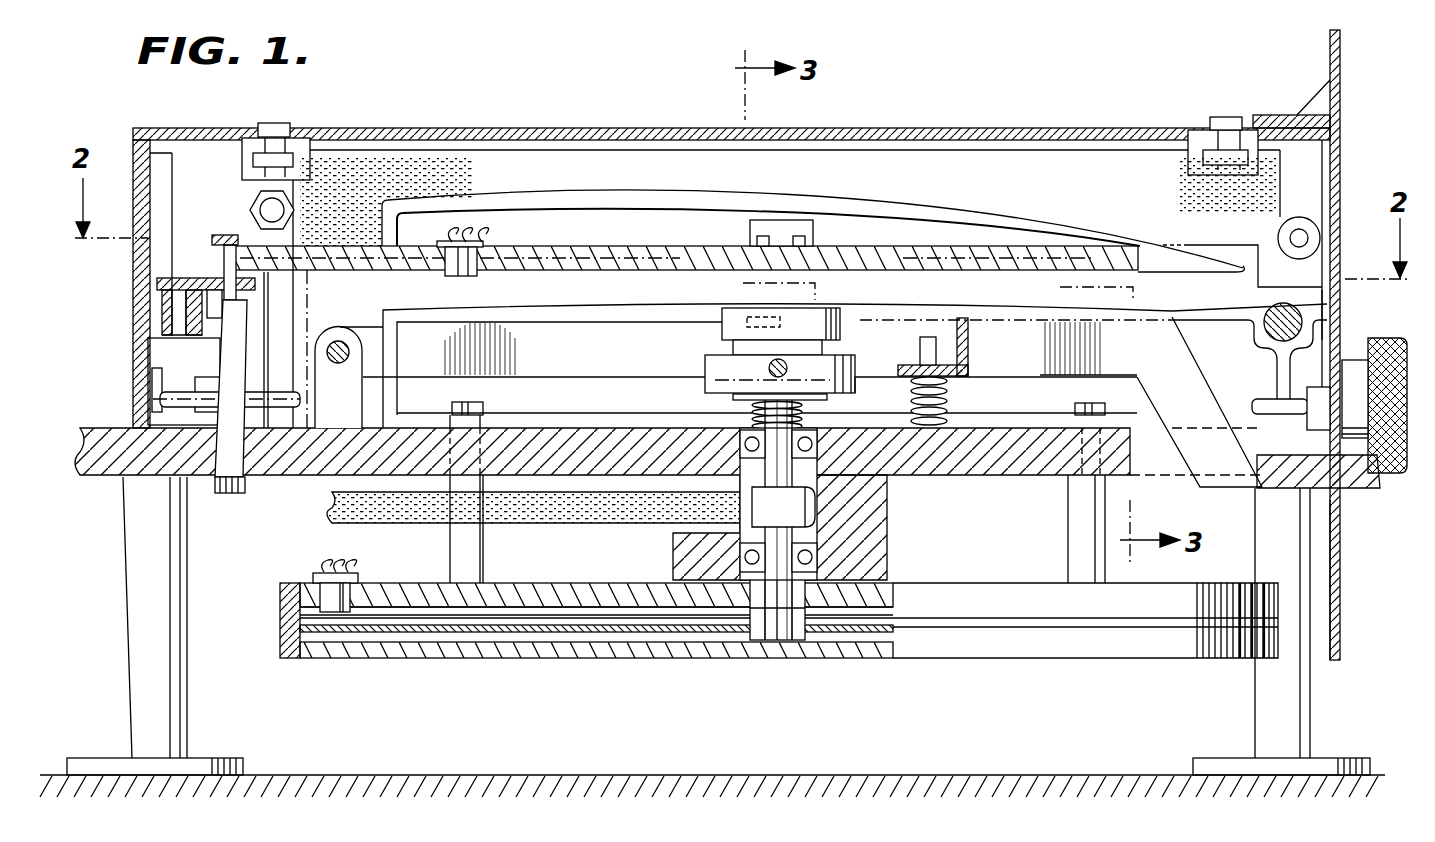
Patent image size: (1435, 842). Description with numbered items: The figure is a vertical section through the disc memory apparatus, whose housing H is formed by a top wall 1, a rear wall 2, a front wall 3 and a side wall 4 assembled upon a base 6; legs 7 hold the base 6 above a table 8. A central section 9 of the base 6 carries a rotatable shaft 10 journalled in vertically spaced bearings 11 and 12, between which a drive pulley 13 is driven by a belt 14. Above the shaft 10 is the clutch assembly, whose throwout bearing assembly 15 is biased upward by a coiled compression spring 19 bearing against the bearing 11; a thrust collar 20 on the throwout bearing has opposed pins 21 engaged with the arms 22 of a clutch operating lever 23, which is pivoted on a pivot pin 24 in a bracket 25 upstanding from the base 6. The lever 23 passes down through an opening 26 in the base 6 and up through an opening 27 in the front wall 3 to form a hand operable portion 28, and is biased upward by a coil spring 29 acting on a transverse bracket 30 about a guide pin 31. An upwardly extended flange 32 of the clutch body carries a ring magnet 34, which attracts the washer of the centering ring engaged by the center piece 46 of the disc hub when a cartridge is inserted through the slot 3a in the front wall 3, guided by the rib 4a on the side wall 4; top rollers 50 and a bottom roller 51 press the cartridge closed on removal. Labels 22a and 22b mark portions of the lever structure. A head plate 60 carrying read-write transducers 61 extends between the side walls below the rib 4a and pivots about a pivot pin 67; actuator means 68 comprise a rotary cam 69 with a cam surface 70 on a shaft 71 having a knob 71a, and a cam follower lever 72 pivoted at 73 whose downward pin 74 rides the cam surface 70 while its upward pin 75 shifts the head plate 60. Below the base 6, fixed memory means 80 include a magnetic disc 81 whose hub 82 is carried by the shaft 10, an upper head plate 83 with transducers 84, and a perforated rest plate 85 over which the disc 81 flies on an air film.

The top wall 1 is at (345, 130).
The rear wall 2 is at (140, 247).
The front wall 3 is at (1340, 158).
The transversely elongated slot 3a is at (1338, 290).
The side wall 4 is at (585, 172).
The guide rib 4a is at (915, 203).
The base 6 is at (100, 480).
The legs 7 is at (132, 684).
The table 8 is at (515, 777).
The central section 9 is at (895, 537).
The rotatable shaft 10 is at (800, 480).
The bearing 11 is at (740, 442).
The bearing 12 is at (820, 567).
The drive pulley 13 is at (780, 510).
The belt 14 is at (605, 507).
The throwout bearing assembly 15 is at (735, 397).
The coiled compression spring 19 is at (805, 420).
The thrust collar 20 is at (856, 388).
The pins 21 is at (770, 365).
The arms 22 is at (855, 366).
The carrier plate portion 22a is at (980, 305).
The carrier plate portion 22b is at (790, 315).
The clutch operating lever 23 is at (575, 380).
The pivot pin 24 is at (350, 352).
The bracket 25 is at (355, 405).
The opening 26 is at (1132, 472).
The opening 27 is at (1342, 522).
The hand operable portion 28 is at (1300, 492).
The coil spring 29 is at (950, 402).
The transverse bracket 30 is at (970, 330).
The guide pin 31 is at (915, 345).
The upwardly extended flange 32 is at (905, 365).
The ring magnet 34 is at (730, 312).
The center piece 46 is at (1172, 268).
The top rollers 50 is at (1320, 240).
The bottom roller 51 is at (1275, 322).
The head plate 60 is at (555, 250).
The read-write transducers 61 is at (462, 277).
The pivot pin 67 is at (315, 340).
The actuator means 68 is at (210, 500).
The rotary cam 69 is at (238, 490).
The cam surface 70 is at (150, 345).
The shaft 71 is at (280, 405).
The actuator knob 71a is at (1385, 470).
The cam follower lever 72 is at (150, 270).
The pivot 73 is at (163, 312).
The cam surface engaging pin 74 is at (210, 325).
The pin 75 is at (222, 238).
The fixed memory means 80 is at (751, 559).
The rotatable magnetic memory disc 81 is at (832, 650).
The hub 82 is at (777, 642).
The upper disc or head plate 83 is at (425, 584).
The magnetic transducers 84 is at (330, 600).
The perforated air control or rest plate 85 is at (460, 635).
The housing H is at (488, 112).